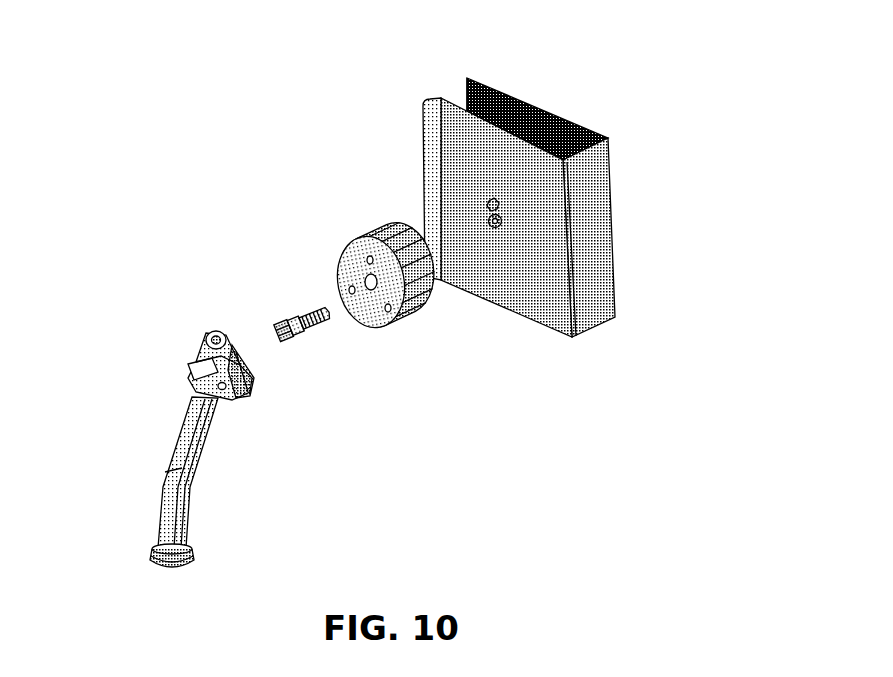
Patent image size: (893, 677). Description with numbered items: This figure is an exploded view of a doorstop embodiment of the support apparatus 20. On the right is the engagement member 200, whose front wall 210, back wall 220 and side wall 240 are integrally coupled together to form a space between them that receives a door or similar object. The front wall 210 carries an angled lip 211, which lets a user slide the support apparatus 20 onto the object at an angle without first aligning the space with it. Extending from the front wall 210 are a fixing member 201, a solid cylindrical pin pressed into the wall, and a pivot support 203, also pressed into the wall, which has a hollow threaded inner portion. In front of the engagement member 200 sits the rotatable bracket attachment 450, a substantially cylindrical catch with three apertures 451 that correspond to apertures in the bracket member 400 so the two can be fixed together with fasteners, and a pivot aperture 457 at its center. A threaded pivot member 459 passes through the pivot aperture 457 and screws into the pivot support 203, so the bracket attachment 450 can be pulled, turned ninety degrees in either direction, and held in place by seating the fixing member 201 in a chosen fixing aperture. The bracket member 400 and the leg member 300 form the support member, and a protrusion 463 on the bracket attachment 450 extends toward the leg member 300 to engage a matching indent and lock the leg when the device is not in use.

The support apparatus 20 is at (631, 113).
The engagement member 200 is at (538, 211).
The fixing member 201 is at (487, 200).
The pivot support 203 is at (496, 228).
The front wall 210 is at (552, 320).
The angled lip 211 is at (425, 120).
The back wall 220 is at (530, 113).
The side wall 240 is at (600, 277).
The leg member 300 is at (151, 488).
The bracket member 400 is at (182, 407).
The bracket attachment 450 is at (350, 295).
The apertures 451 is at (367, 261).
The pivot aperture 457 is at (368, 285).
The pivot member 459 is at (331, 321).
The protrusion 463 is at (247, 380).